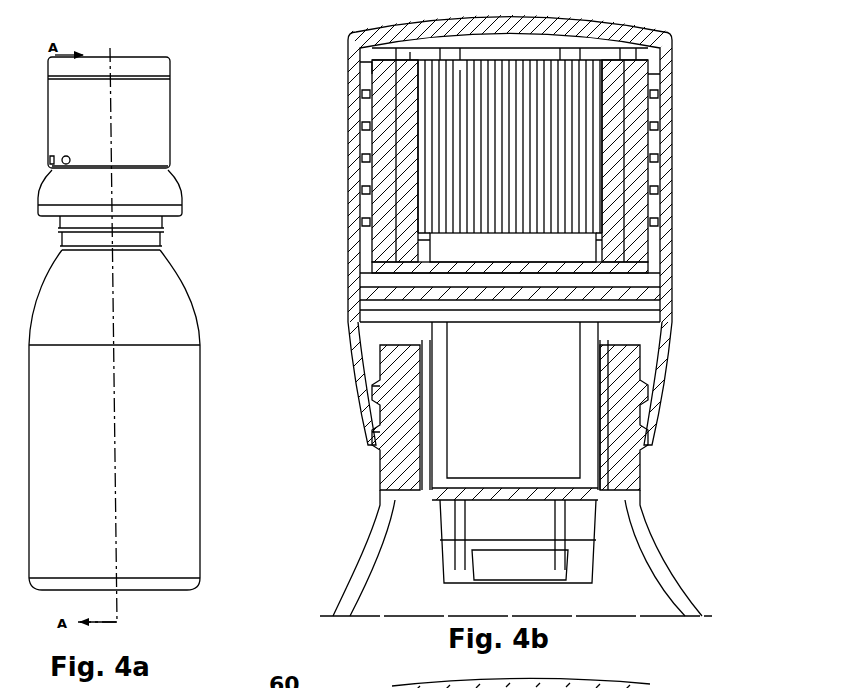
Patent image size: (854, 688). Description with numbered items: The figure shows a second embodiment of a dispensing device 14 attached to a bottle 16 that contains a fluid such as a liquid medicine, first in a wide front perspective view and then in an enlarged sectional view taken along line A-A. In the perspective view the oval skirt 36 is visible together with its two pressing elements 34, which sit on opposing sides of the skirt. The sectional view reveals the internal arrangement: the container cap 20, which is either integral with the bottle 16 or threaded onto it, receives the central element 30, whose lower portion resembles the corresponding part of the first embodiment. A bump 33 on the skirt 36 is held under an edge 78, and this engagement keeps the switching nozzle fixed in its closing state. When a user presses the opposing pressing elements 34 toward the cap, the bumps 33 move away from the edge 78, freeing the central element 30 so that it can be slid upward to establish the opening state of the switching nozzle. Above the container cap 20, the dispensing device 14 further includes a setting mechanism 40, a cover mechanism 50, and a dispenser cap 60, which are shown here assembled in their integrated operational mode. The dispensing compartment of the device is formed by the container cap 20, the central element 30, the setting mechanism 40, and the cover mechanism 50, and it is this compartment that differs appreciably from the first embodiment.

In FIG. 4A, the dispensing device 14 is at (189, 93).
In FIG. 4B, the dispensing device 14 is at (702, 170).
In FIG. 4A, the bottle 16 is at (201, 388).
In FIG. 4B, the container cap 20 is at (652, 400).
In FIG. 4B, the central element 30 is at (642, 326).
In FIG. 4B, the bump 33 is at (372, 448).
In FIG. 4A, the pressing elements 34 is at (178, 204).
In FIG. 4B, the oval skirt 36 is at (352, 392).
In FIG. 4B, the setting mechanism 40 is at (664, 238).
In FIG. 4B, the cover mechanism 50 is at (405, 120).
In FIG. 4B, the dispenser cap 60 is at (350, 40).
In FIG. 4B, the edge 78 is at (378, 440).